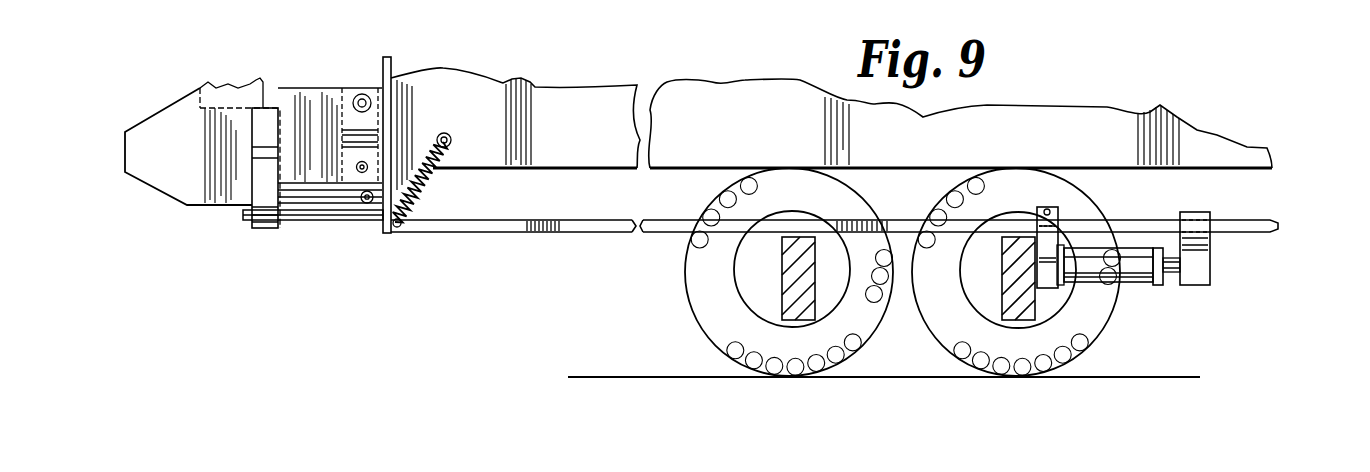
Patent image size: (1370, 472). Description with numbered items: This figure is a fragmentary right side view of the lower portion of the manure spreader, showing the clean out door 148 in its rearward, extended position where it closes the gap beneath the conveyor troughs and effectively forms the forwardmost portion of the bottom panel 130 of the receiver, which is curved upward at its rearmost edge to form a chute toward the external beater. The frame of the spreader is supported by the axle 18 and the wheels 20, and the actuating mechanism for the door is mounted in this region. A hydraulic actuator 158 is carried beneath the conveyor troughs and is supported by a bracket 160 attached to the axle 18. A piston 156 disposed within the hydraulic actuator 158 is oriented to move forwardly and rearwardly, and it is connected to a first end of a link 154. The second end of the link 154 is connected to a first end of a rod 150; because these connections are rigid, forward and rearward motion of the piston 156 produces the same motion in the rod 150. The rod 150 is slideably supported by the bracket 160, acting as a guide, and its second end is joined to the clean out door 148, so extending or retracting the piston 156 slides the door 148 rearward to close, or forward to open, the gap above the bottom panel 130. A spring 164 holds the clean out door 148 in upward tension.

The axle 18 is at (797, 310).
The wheels 20 is at (957, 338).
The bottom panel 130 is at (212, 205).
The clean out door 148 is at (315, 220).
The rod 150 is at (565, 227).
The link 154 is at (1202, 265).
The piston 156 is at (1170, 275).
The hydraulic actuator 158 is at (1130, 265).
The bracket 160 is at (1050, 278).
The spring 164 is at (420, 187).